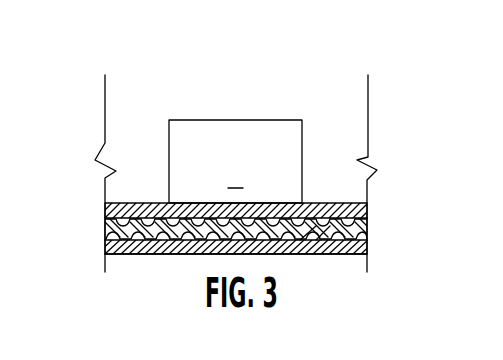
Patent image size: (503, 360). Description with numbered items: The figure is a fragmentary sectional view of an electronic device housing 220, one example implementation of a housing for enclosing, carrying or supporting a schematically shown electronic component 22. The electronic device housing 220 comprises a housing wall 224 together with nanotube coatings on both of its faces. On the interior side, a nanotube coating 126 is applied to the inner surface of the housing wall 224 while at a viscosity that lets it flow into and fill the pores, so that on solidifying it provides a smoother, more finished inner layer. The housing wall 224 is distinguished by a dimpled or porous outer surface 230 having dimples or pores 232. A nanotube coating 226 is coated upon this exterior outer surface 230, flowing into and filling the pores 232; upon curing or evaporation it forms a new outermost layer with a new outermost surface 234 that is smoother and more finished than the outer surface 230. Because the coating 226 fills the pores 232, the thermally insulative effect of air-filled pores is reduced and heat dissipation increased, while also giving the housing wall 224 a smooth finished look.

The electronic component 22 is at (200, 120).
The nanotube coating 126 is at (128, 203).
The electronic device housing 220 is at (325, 201).
The housing wall 224 is at (105, 223).
The nanotube coating 226 is at (122, 254).
The outer surface 230 is at (188, 238).
The pores 232 is at (314, 240).
The outermost surface 234 is at (291, 254).